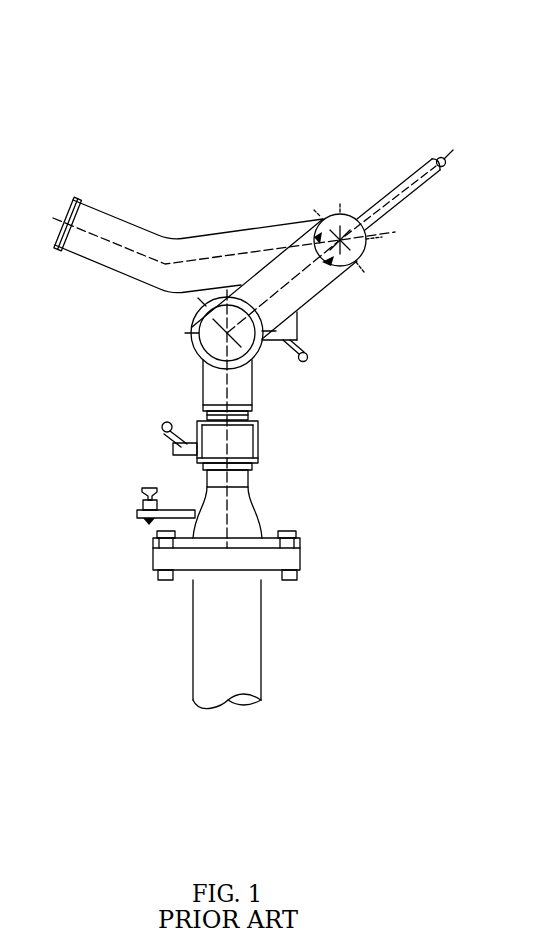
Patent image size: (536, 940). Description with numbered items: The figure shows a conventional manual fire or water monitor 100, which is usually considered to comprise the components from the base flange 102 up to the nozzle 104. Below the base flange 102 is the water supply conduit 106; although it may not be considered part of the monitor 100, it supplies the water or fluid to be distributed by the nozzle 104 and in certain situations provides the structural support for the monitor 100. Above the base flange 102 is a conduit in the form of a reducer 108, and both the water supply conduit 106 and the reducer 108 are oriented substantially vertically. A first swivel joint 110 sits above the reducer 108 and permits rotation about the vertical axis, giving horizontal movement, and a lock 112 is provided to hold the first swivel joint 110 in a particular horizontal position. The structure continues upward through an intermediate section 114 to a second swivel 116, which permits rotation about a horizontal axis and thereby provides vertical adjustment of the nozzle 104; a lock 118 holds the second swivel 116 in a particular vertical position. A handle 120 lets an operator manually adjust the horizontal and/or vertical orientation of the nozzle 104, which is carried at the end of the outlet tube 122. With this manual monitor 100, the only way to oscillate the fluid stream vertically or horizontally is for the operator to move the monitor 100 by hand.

The fire or water monitor 100 is at (350, 87).
The base flange 102 is at (300, 538).
The nozzle 104 is at (68, 197).
The water supply conduit 106 is at (250, 656).
The reducer 108 is at (261, 516).
The first swivel joint 110 is at (260, 451).
The lock 112 is at (163, 423).
The vertical pipe 114 is at (253, 397).
The second swivel 116 is at (195, 331).
The lock 118 is at (312, 355).
The handle 120 is at (395, 188).
The tube 122 is at (148, 231).